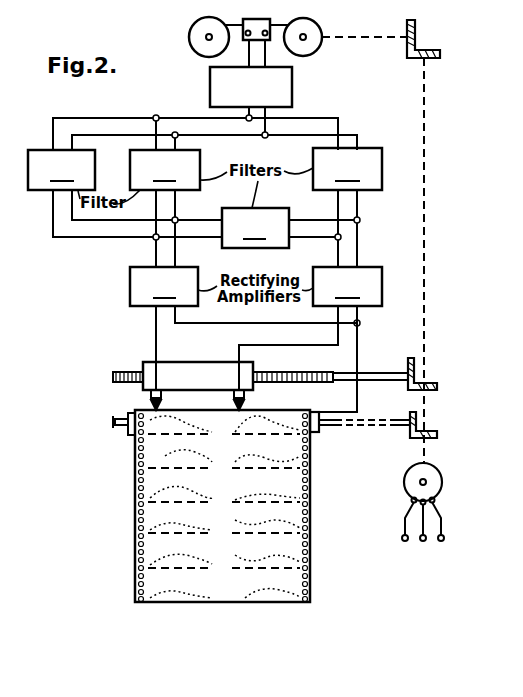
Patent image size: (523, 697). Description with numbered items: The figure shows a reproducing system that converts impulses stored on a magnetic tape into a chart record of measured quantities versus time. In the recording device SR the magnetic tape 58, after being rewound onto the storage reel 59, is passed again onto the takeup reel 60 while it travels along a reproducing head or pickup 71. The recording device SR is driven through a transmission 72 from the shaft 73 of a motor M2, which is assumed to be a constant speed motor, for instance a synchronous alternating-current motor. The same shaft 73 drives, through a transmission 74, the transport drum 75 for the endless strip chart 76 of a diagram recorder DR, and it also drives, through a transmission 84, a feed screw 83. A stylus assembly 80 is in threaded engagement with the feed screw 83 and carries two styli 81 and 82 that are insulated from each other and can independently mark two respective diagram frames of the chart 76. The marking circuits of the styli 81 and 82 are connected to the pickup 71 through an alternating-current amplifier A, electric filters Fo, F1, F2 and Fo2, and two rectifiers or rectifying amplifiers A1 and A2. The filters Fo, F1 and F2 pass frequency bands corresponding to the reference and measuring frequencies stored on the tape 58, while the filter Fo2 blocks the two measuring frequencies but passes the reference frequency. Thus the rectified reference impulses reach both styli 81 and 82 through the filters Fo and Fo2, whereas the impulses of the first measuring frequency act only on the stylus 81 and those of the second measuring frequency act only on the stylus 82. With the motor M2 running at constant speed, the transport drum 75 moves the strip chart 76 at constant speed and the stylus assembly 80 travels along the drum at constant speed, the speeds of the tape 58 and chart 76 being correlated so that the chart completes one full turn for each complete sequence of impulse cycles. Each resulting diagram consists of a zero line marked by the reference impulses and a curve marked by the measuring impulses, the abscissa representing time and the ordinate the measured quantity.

The magnetic tape 58 is at (270, 22).
The storage reel 59 is at (204, 54).
The takeup reel 60 is at (306, 54).
The reproducing head 71 is at (259, 20).
The transmission 72 is at (415, 40).
The shaft 73 is at (427, 226).
The transmission 74 is at (419, 429).
The transport drum 75 is at (314, 432).
The endless strip chart 76 is at (314, 500).
The stylus assembly 80 is at (212, 362).
The stylus 81 is at (151, 401).
The stylus 82 is at (246, 402).
The feed screw 83 is at (321, 372).
The transmission 84 is at (416, 378).
The recording device SR is at (336, 20).
The alternating-current amplifier A is at (290, 107).
The filter Fo is at (61, 170).
The filter F1 is at (165, 170).
The filter F2 is at (347, 169).
The filter Fo2 is at (255, 228).
The rectifying amplifier A1 is at (164, 286).
The rectifying amplifier A2 is at (347, 286).
The diagram recorder DR is at (103, 411).
The motor M2 is at (437, 474).